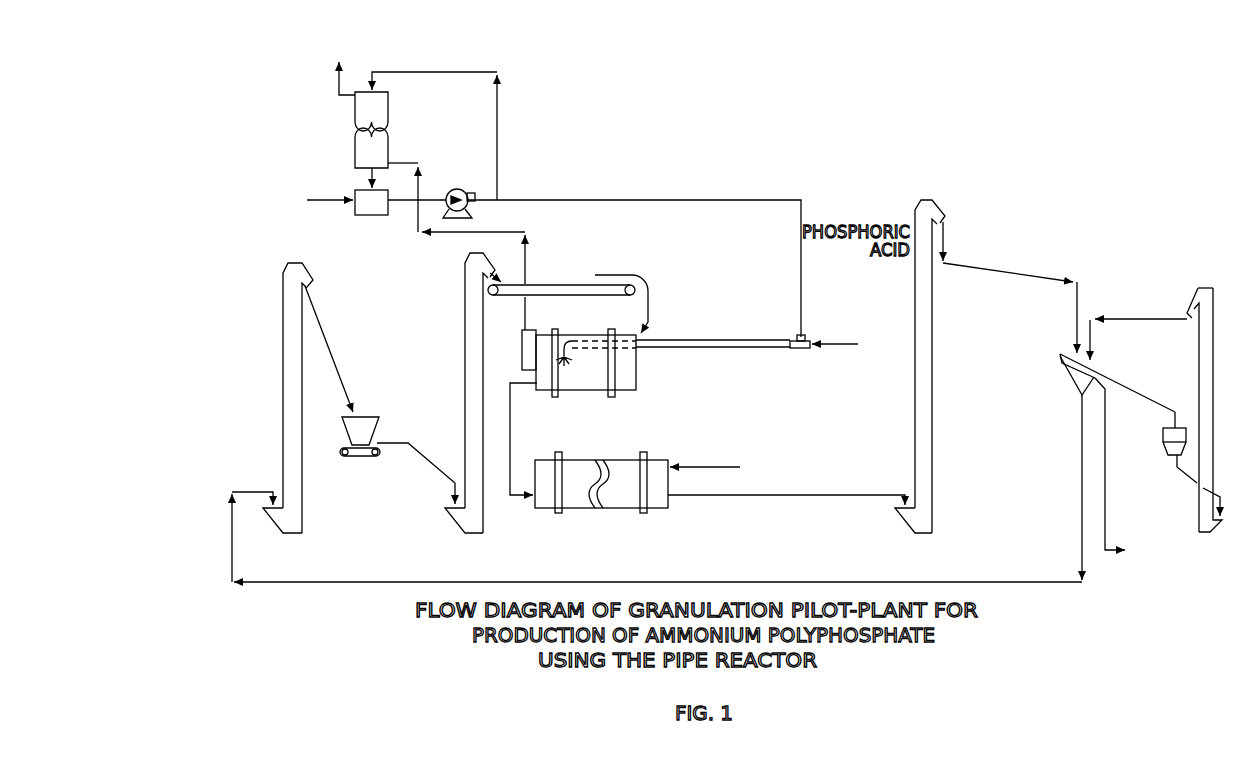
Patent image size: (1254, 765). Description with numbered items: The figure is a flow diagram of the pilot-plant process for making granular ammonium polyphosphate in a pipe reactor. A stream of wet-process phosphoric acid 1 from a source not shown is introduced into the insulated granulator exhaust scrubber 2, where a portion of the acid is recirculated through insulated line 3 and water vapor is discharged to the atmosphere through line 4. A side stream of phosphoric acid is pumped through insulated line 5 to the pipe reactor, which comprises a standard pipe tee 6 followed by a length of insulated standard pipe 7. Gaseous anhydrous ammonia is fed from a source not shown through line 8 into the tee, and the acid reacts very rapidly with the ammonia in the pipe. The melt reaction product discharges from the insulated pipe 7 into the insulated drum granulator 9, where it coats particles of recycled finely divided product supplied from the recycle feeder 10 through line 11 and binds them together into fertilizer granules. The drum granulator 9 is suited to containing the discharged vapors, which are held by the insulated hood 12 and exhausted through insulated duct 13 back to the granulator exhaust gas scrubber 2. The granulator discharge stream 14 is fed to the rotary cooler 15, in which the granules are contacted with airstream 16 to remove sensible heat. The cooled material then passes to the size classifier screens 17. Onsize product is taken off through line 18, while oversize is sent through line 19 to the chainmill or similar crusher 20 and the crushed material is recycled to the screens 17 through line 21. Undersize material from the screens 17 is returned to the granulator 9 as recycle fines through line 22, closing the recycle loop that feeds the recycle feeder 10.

The wet-process phosphoric acid 1 is at (337, 202).
The insulated granulator exhaust scrubber 2 is at (353, 110).
The insulated line 3 is at (500, 157).
The line 4 is at (337, 78).
The insulated line 5 is at (613, 193).
The standard pipe tee 6 is at (808, 337).
The insulated standard pipe 7 is at (773, 337).
The line 8 is at (842, 350).
The insulated drum granulator 9 is at (567, 332).
The recycle feeder 10 is at (372, 413).
The line 11 is at (400, 437).
The insulated hood 12 is at (520, 347).
The insulated duct 13 is at (520, 305).
The granulator discharge stream 14 is at (520, 497).
The rotary cooler 15 is at (627, 460).
The airstream 16 is at (710, 465).
The size classifier screens 17 is at (1062, 348).
The line 18 is at (1108, 538).
The line 19 is at (1132, 388).
The chainmill or similar crusher 20 is at (1162, 430).
The line 21 is at (1132, 315).
The line 22 is at (963, 575).